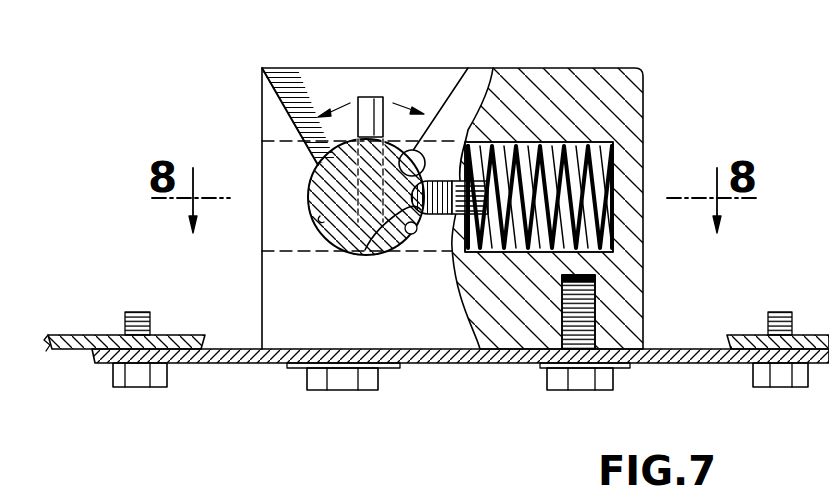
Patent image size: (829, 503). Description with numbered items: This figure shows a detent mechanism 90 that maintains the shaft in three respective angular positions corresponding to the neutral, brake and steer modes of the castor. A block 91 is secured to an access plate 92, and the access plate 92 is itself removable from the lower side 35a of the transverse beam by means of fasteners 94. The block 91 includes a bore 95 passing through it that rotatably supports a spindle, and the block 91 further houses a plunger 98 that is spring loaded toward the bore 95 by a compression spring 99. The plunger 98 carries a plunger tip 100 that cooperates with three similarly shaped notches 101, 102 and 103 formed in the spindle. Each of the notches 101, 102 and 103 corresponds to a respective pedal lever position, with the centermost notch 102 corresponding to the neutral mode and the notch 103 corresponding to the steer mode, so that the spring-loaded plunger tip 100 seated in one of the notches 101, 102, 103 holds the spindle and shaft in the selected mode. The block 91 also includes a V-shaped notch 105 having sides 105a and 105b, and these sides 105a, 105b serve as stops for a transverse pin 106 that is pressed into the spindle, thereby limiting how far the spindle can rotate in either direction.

The lower side 35a is at (97, 335).
The detent mechanism 90 is at (465, 174).
The block 91 is at (603, 68).
The access plate 92 is at (240, 366).
The fasteners 94 is at (127, 388).
The bore 95 is at (323, 232).
The plunger 98 is at (493, 130).
The compression spring 99 is at (618, 150).
The plunger tip 100 is at (444, 214).
The notch 101 is at (417, 240).
The centermost notch 102 is at (366, 216).
The notch 103 is at (420, 138).
The V-shaped notch 105 is at (363, 84).
The side 105a is at (287, 68).
The side 105b is at (457, 68).
The transverse pin 106 is at (365, 97).